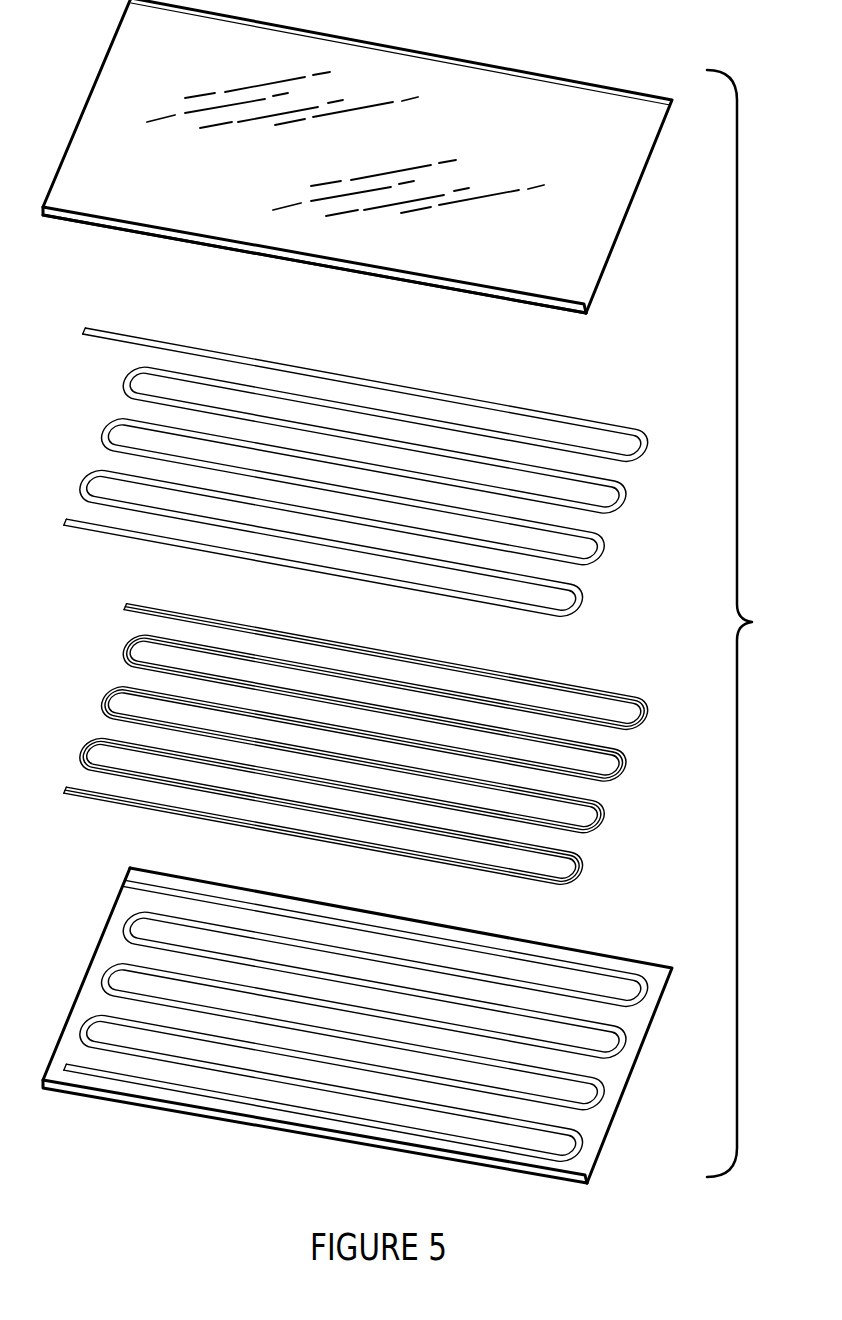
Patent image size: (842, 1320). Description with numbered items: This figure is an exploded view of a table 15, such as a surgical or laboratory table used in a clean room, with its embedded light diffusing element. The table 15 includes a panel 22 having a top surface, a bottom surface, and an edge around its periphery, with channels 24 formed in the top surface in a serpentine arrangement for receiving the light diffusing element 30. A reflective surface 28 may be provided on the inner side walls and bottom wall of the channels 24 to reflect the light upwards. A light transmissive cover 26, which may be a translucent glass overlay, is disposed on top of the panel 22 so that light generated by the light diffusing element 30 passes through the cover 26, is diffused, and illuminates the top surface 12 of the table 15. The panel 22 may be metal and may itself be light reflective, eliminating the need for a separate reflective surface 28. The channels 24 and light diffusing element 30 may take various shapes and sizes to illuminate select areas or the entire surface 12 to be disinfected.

The surface 12 is at (485, 87).
The light transmissive cover 26 is at (543, 302).
The light diffusing element 30 is at (612, 423).
The reflective surface 28 is at (612, 691).
The panel 22 is at (543, 1175).
The channels 24 is at (573, 963).
The table 15 is at (740, 623).